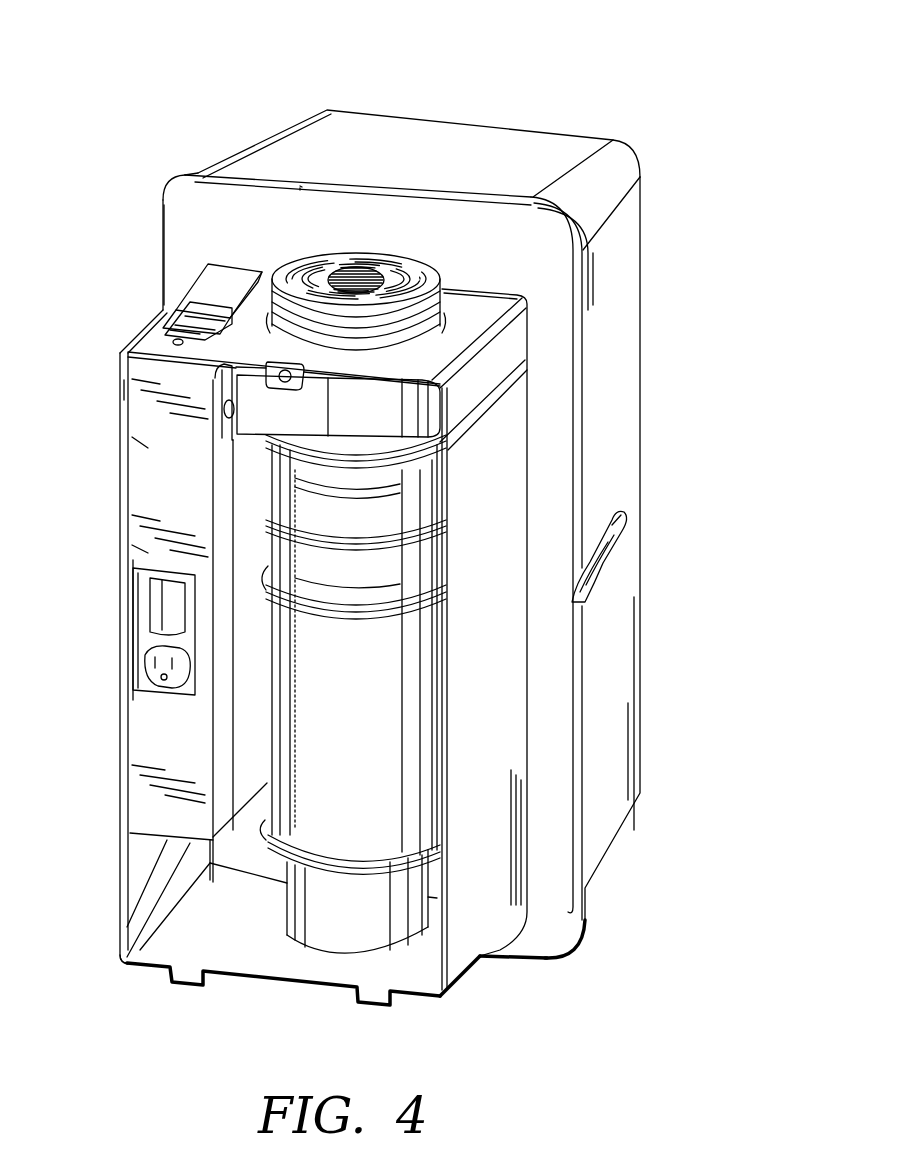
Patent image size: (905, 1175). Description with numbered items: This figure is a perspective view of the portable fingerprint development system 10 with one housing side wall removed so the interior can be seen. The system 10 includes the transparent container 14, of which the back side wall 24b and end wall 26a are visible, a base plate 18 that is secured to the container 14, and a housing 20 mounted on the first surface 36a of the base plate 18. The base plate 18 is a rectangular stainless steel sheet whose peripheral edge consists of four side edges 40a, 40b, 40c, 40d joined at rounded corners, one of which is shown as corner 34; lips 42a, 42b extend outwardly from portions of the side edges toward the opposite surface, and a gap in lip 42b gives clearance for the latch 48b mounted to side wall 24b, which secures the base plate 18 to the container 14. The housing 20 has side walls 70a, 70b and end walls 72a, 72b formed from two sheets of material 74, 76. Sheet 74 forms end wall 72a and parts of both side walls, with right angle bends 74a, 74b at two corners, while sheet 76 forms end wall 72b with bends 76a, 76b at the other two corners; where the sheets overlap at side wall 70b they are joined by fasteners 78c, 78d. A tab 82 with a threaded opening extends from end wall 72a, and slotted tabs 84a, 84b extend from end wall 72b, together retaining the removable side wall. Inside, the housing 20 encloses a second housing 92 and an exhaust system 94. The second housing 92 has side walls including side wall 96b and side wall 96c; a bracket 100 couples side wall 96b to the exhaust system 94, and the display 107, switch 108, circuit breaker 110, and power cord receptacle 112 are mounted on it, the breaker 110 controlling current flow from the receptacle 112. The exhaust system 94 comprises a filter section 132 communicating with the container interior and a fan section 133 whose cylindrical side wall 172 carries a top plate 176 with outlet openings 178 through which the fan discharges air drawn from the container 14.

The portable fingerprint development system 10 is at (438, 100).
The container 14 is at (583, 138).
The base plate 18 is at (178, 205).
The housing 20 is at (499, 696).
The back side wall 24b is at (625, 342).
The end wall 26a is at (518, 142).
The rounded corner 34 is at (179, 176).
The first surface 36a is at (280, 285).
The side edge 40a is at (305, 196).
The side edge 40b is at (572, 345).
The side edge 40c is at (493, 962).
The side edge 40d is at (158, 240).
The lip 42a is at (365, 185).
The lip 42b is at (583, 385).
The latch 48b is at (616, 535).
The side wall 70a is at (118, 492).
The side wall 70b is at (476, 689).
The end wall 72a is at (466, 292).
The end wall 72b is at (318, 993).
The sheet of material 74 is at (120, 390).
The right angle bend 74a is at (120, 350).
The right angle bend 74b is at (527, 298).
The sheet of material 76 is at (487, 930).
The right angle bend 76a is at (440, 1005).
The right angle bend 76b is at (118, 960).
The fastener 78c is at (445, 447).
The fastener 78d is at (522, 365).
The tab 82 is at (302, 368).
The tab 84a is at (185, 990).
The tab 84b is at (370, 1008).
The second housing 92 is at (145, 450).
The exhaust system 94 is at (412, 752).
The side wall 96b is at (248, 623).
The side wall 96c is at (145, 545).
The bracket 100 is at (305, 410).
The display 107 is at (230, 268).
The switch 108 is at (205, 325).
The circuit breaker 110 is at (150, 598).
The power cord receptacle 112 is at (145, 678).
The filter section 132 is at (430, 688).
The fan section 133 is at (414, 250).
The cylindrical side wall 172 is at (356, 527).
The top plate 176 is at (330, 255).
The outlet openings 178 is at (390, 262).